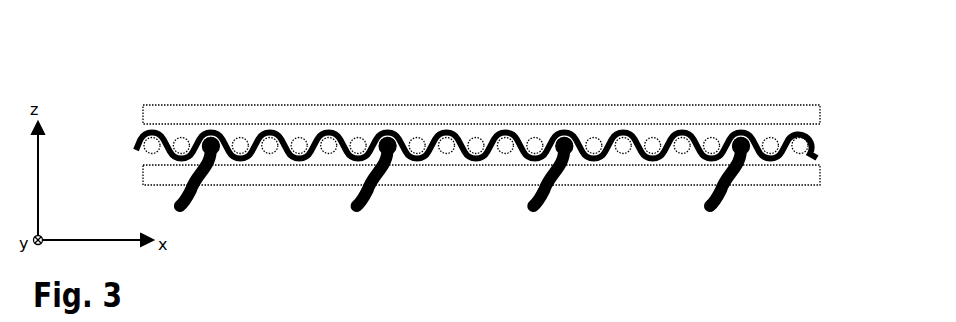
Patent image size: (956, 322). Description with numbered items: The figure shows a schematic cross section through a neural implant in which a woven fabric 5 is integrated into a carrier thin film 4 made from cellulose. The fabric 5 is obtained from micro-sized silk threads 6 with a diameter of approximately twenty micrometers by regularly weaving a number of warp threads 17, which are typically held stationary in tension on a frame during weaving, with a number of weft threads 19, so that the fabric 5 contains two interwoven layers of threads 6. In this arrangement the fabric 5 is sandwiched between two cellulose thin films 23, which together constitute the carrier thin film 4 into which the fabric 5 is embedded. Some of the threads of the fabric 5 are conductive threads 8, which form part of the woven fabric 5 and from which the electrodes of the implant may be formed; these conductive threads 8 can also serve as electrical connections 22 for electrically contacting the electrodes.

The carrier thin film 4 is at (129, 98).
The woven fabric 5 is at (808, 156).
The threads 6 is at (360, 144).
The conductive threads 8 is at (209, 140).
The warp threads 17 is at (478, 140).
The weft threads 19 is at (622, 131).
The electrical connections 22 is at (705, 208).
The cellulose thin films 23 is at (290, 113).